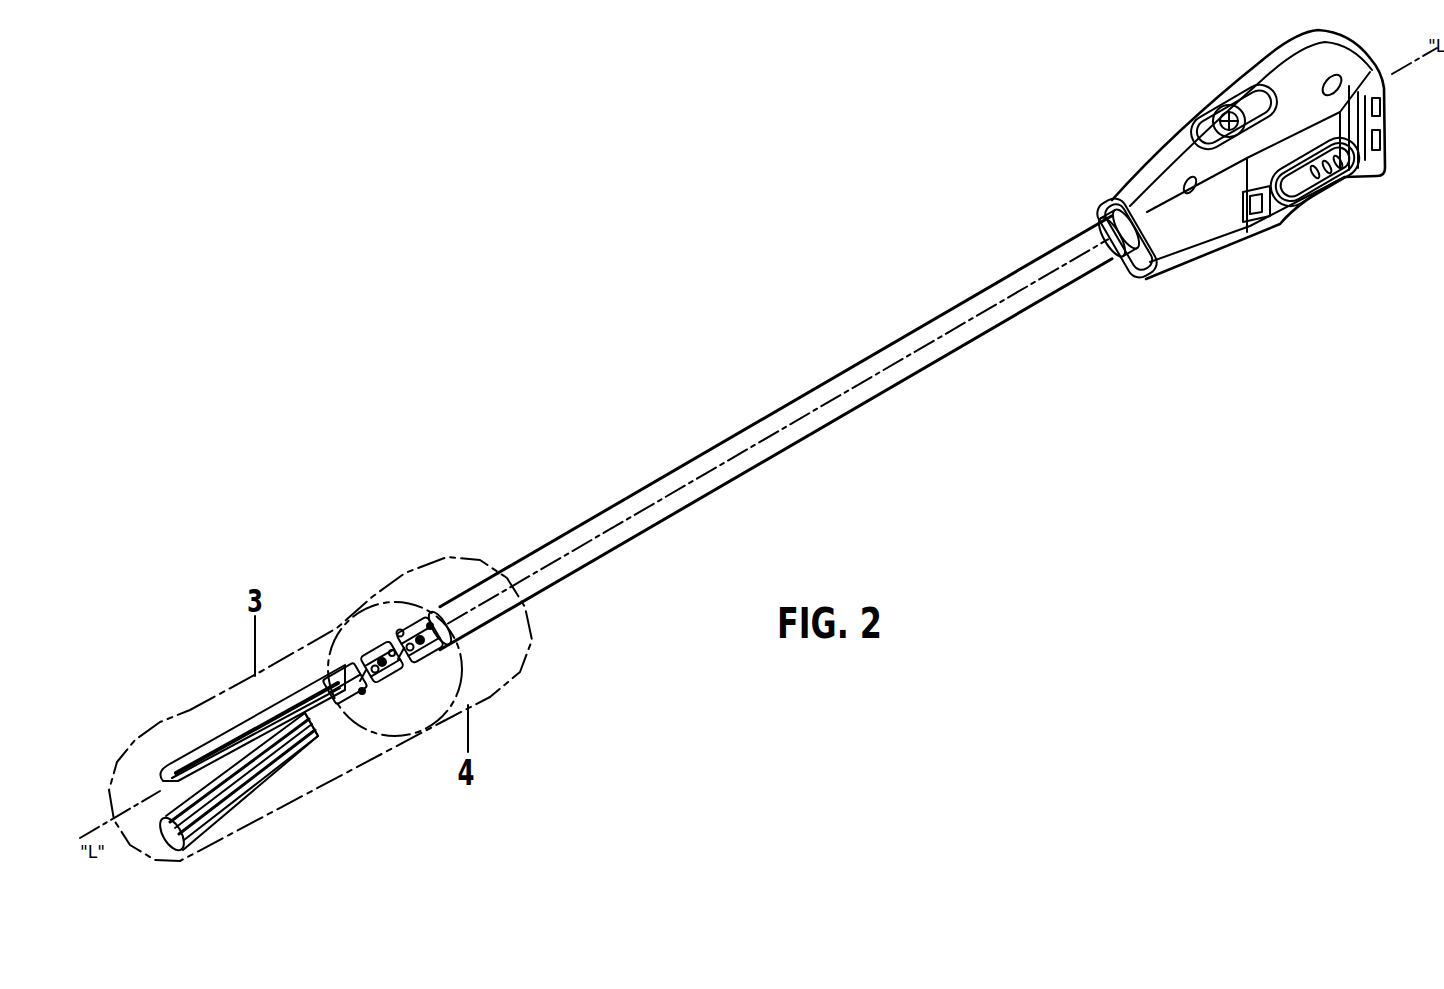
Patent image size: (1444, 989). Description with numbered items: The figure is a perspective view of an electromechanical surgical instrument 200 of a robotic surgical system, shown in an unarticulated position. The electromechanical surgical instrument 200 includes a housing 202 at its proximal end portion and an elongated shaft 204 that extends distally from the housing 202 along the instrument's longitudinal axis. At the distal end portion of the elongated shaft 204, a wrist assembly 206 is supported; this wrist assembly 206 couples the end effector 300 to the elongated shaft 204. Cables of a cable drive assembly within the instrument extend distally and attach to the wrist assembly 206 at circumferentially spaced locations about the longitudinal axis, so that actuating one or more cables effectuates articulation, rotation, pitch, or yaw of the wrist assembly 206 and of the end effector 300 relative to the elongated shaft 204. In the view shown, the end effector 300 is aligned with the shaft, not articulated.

The electromechanical surgical instrument 200 is at (950, 256).
The housing 202 is at (1200, 253).
The elongated shaft 204 is at (880, 388).
The wrist assembly 206 is at (423, 667).
The end effector 300 is at (290, 764).